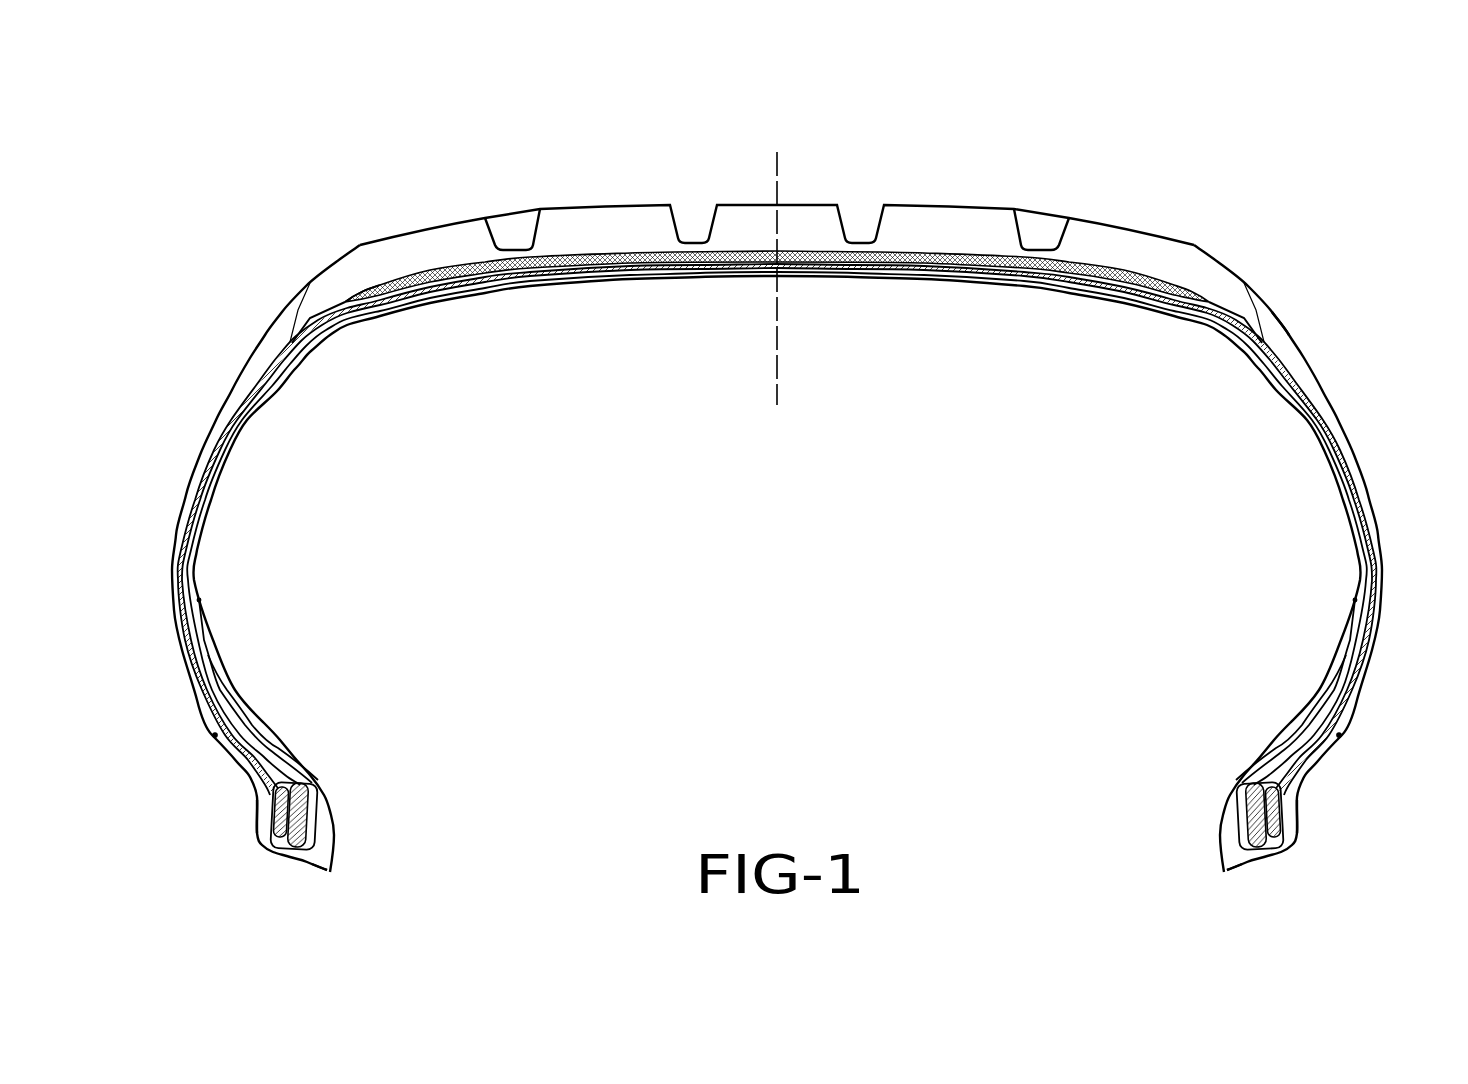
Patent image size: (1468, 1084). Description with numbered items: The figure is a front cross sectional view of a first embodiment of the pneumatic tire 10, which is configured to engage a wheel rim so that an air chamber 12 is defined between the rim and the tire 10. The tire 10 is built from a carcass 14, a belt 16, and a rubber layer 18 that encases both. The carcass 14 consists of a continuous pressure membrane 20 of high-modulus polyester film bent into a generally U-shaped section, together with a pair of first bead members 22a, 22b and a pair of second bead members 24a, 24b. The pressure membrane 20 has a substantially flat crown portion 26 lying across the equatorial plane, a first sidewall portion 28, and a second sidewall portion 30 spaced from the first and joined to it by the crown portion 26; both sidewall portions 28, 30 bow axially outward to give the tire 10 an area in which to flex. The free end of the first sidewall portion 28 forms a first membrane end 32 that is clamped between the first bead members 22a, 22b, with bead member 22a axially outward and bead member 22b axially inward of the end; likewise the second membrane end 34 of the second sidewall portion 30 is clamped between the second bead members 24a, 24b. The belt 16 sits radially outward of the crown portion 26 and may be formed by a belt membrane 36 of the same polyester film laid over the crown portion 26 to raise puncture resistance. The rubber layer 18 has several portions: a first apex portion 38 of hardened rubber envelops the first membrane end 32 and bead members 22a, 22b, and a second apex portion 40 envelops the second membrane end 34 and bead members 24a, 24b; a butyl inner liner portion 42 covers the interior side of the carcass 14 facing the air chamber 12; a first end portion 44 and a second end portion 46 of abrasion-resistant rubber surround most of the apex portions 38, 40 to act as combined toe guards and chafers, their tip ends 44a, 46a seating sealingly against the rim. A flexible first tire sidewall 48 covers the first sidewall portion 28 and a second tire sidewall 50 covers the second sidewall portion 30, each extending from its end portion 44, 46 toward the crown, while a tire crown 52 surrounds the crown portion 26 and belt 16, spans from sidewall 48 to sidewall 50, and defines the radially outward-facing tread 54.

The pneumatic tire 10 is at (211, 173).
The air chamber 12 is at (760, 593).
The carcass 14 is at (1236, 305).
The belt 16 is at (1172, 278).
The rubber layer 18 is at (1325, 352).
The continuous pressure membrane 20 is at (222, 475).
The first bead member 22a is at (287, 827).
The first bead member 22b is at (296, 798).
The second bead member 24a is at (1267, 827).
The second bead member 24b is at (1258, 798).
The crown portion 26 is at (612, 280).
The first sidewall portion 28 is at (200, 527).
The second sidewall portion 30 is at (1354, 527).
The first membrane end 32 is at (297, 848).
The second membrane end 34 is at (1257, 848).
The belt membrane 36 is at (388, 282).
The first apex portion 38 is at (247, 747).
The second apex portion 40 is at (1307, 747).
The inner liner portion 42 is at (302, 355).
The first end portion 44 is at (257, 827).
The tip end 44a is at (330, 872).
The second end portion 46 is at (1297, 827).
The tip end 46a is at (1224, 872).
The first tire sidewall 48 is at (214, 410).
The second tire sidewall 50 is at (1340, 410).
The tire crown 52 is at (327, 297).
The tread 54 is at (540, 224).